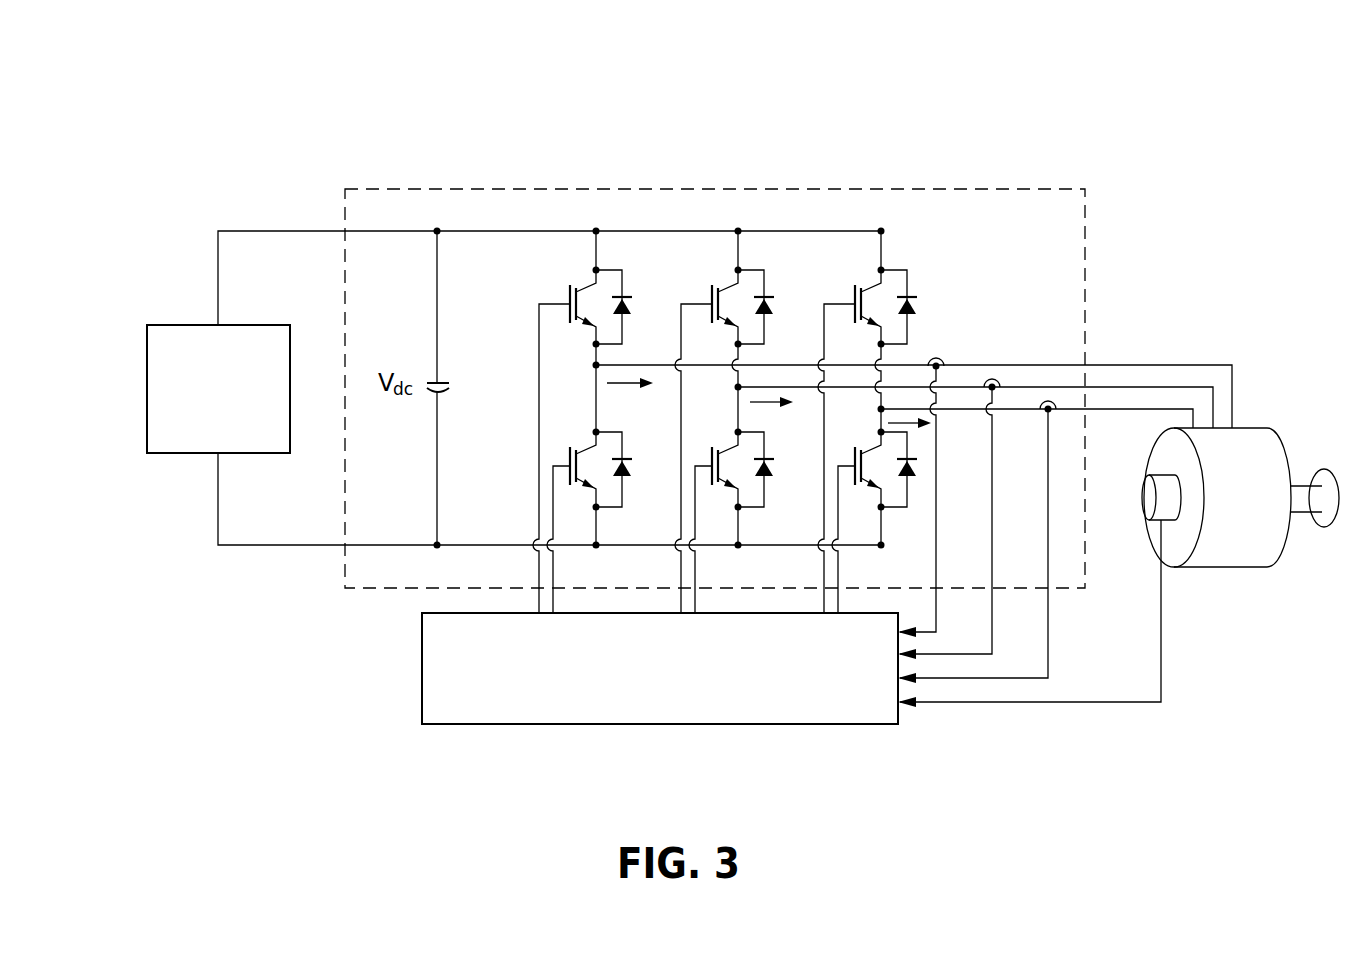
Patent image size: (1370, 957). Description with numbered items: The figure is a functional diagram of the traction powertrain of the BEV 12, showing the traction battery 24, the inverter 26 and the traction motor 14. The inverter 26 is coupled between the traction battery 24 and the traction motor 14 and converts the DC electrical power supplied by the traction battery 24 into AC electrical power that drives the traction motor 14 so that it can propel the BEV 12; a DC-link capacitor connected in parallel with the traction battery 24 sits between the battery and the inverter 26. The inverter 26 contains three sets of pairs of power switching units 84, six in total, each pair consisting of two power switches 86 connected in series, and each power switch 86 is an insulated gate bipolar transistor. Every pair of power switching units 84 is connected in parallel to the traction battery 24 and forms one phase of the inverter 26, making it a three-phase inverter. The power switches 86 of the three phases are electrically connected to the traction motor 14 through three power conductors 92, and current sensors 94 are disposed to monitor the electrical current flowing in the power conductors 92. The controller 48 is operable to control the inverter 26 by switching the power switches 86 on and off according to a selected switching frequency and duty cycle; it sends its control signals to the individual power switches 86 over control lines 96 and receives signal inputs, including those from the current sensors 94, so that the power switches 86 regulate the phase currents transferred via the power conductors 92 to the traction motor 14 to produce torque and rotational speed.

The BEV 12 is at (848, 100).
The traction motor 14 is at (1253, 428).
The traction battery 24 is at (147, 386).
The inverter 26 is at (756, 188).
The controller 48 is at (678, 724).
The power switching units 84 is at (606, 292).
The power switches 86 is at (568, 299).
The power conductors 92 is at (1097, 408).
The current sensors 94 is at (1048, 401).
The control lines 96 is at (539, 578).